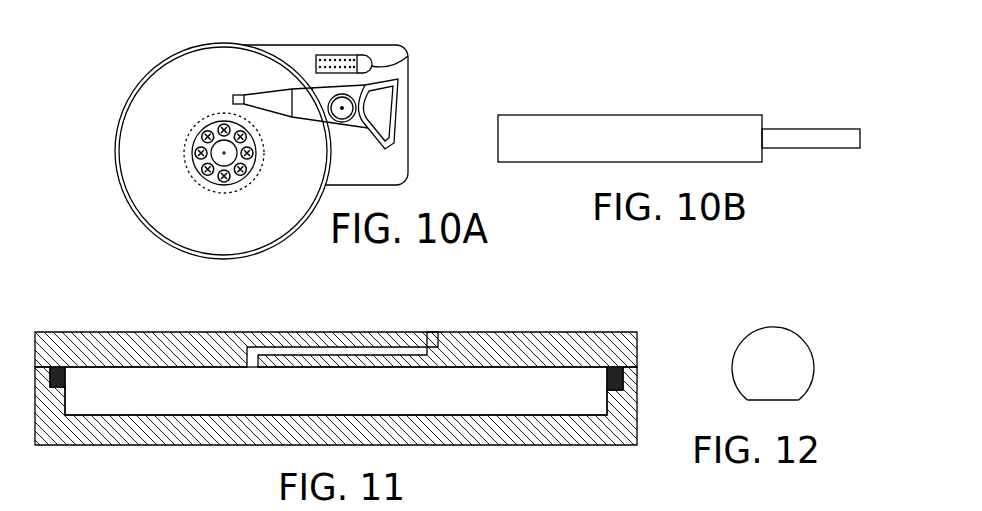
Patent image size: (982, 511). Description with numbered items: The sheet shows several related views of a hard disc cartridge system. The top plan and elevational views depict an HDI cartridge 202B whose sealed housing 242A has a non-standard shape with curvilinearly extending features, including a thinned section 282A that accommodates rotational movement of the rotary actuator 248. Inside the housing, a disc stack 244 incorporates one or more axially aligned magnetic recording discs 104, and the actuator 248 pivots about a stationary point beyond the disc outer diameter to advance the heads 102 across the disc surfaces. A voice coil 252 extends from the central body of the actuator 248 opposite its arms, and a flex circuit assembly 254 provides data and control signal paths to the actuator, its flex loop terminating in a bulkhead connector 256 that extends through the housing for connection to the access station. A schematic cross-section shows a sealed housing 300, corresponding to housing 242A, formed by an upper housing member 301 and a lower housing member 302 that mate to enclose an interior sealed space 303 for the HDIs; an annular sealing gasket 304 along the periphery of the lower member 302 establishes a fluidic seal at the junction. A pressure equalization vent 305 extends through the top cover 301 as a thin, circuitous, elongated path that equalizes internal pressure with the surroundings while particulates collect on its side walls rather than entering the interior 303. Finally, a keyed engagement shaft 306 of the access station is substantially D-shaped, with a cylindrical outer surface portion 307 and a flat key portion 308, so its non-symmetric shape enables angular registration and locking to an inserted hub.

In FIG. 10A, the HDI cartridge 202B is at (131, 45).
In FIG. 10B, the HDI cartridge 202B is at (573, 76).
In FIG. 10A, the magnetic recording disc 104 is at (222, 57).
In FIG. 10A, the head 102 is at (240, 95).
In FIG. 10A, the disc stack 244 is at (131, 125).
In FIG. 10A, the sealed housing 242A is at (130, 205).
In FIG. 10B, the sealed housing 242A is at (678, 108).
In FIG. 10A, the rotary actuator 248 is at (305, 122).
In FIG. 10A, the voice coil 252 is at (399, 113).
In FIG. 10A, the flex circuit assembly 254 is at (408, 53).
In FIG. 10A, the bulkhead connector 256 is at (338, 55).
In FIG. 10B, the thinned section 282A is at (810, 129).
In FIG. 11, the sealed housing 300 is at (336, 383).
In FIG. 11, the upper housing member 301 is at (336, 326).
In FIG. 11, the lower housing member 302 is at (492, 445).
In FIG. 11, the interior sealed space 303 is at (217, 372).
In FIG. 11, the annular sealing gasket 304 is at (65, 377).
In FIG. 11, the pressure equalization vent 305 is at (335, 353).
In FIG. 12, the keyed engagement shaft 306 is at (779, 356).
In FIG. 12, the cylindrical outer surface portion 307 is at (812, 353).
In FIG. 12, the flat portion 308 is at (767, 402).